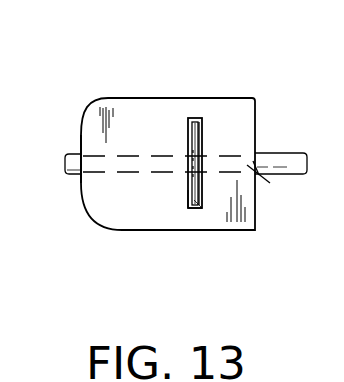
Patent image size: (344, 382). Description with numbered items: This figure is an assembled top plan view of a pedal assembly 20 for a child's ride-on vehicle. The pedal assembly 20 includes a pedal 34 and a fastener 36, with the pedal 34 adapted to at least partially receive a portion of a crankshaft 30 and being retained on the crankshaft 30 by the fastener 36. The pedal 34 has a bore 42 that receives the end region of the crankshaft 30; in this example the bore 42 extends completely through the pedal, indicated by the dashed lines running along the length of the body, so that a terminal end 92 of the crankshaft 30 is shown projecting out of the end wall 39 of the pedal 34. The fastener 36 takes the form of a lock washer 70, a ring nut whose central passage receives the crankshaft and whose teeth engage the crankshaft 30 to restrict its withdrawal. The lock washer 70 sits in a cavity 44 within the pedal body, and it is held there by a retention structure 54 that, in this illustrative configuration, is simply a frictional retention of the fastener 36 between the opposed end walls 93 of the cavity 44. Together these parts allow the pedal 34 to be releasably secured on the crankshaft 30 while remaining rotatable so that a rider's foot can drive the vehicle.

The pedal assembly 20 is at (101, 84).
The pedal 34 is at (243, 93).
The end wall 39 is at (80, 147).
The terminal end 92 is at (75, 178).
The crankshaft 30 is at (289, 152).
The bore 42 is at (275, 187).
The fastener 36 is at (185, 125).
The lock washer 70 is at (200, 130).
The opposed end walls 93 is at (195, 209).
The retention structure 54 is at (190, 209).
The cavity 44 is at (200, 208).